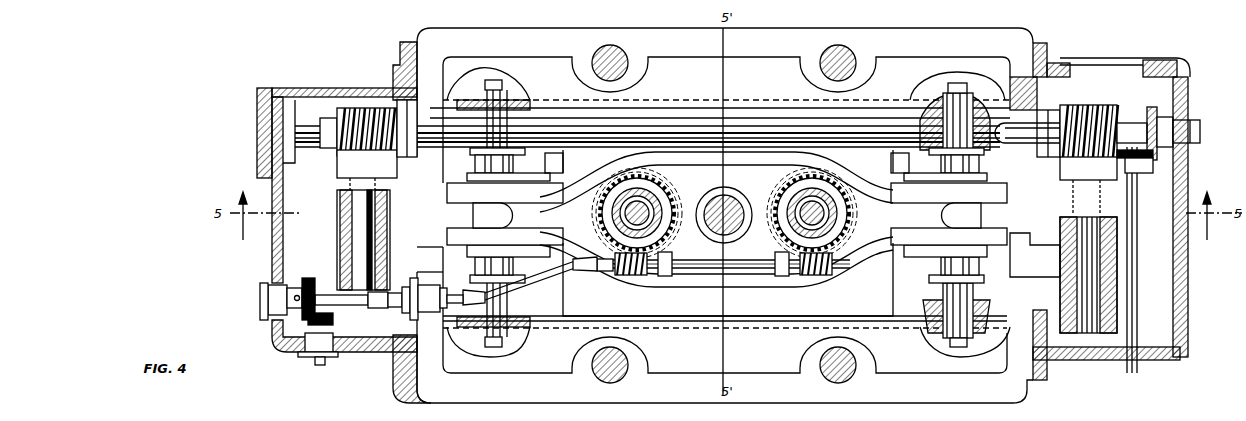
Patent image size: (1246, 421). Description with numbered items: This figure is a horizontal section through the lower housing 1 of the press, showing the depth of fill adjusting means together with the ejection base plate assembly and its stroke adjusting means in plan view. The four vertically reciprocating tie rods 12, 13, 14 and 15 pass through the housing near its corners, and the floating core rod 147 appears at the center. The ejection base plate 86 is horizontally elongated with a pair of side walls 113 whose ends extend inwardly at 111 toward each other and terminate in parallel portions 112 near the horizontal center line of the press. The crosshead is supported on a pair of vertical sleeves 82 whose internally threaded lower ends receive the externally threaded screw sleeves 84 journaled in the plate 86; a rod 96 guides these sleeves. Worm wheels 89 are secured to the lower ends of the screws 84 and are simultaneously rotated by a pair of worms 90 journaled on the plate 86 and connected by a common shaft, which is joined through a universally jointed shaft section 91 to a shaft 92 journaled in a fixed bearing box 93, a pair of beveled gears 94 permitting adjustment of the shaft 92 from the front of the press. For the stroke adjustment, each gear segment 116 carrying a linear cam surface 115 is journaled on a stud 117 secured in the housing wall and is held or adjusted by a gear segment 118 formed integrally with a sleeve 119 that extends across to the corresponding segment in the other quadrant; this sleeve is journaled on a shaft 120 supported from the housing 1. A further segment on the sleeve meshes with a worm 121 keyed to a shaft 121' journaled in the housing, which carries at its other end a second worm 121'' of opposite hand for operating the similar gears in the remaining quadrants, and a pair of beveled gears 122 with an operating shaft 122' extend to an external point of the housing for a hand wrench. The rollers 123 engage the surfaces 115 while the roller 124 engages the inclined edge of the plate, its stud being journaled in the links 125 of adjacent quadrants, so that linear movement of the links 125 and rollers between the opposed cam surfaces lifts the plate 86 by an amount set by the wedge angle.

The lower housing 1 is at (1030, 400).
The tie rod 12 is at (858, 358).
The tie rod 13 is at (590, 356).
The tie rod 14 is at (622, 71).
The tie rod 15 is at (860, 71).
The vertical sleeve 82 is at (612, 226).
The screw sleeve 84 is at (632, 208).
The ejection base plate 86 is at (738, 289).
The worm wheel 89 is at (835, 190).
The worm 90 is at (832, 258).
The universally jointed shaft section 91 is at (530, 285).
The shaft 92 is at (322, 296).
The bearing box 93 is at (272, 250).
The beveled gears 94 is at (300, 324).
The rod 96 is at (656, 206).
The inwardly extending end 111 is at (567, 200).
The parallel portion 112 is at (990, 210).
The side wall 113 is at (755, 163).
The linear cam surface 115 is at (462, 166).
The gear segment 116 is at (402, 165).
The stud 117 is at (950, 105).
The gear segment 118 is at (408, 163).
The sleeve 119 is at (340, 210).
The shaft 120 is at (1095, 280).
The worm 121 is at (1097, 120).
The shaft 121' is at (652, 111).
The second worm 121'' is at (358, 106).
The beveled gears 122 is at (1139, 209).
The operating shaft 122' is at (1144, 260).
The roller 123 is at (514, 163).
The roller 124 is at (482, 213).
The link 125 is at (562, 170).
The floating core rod 147 is at (723, 263).